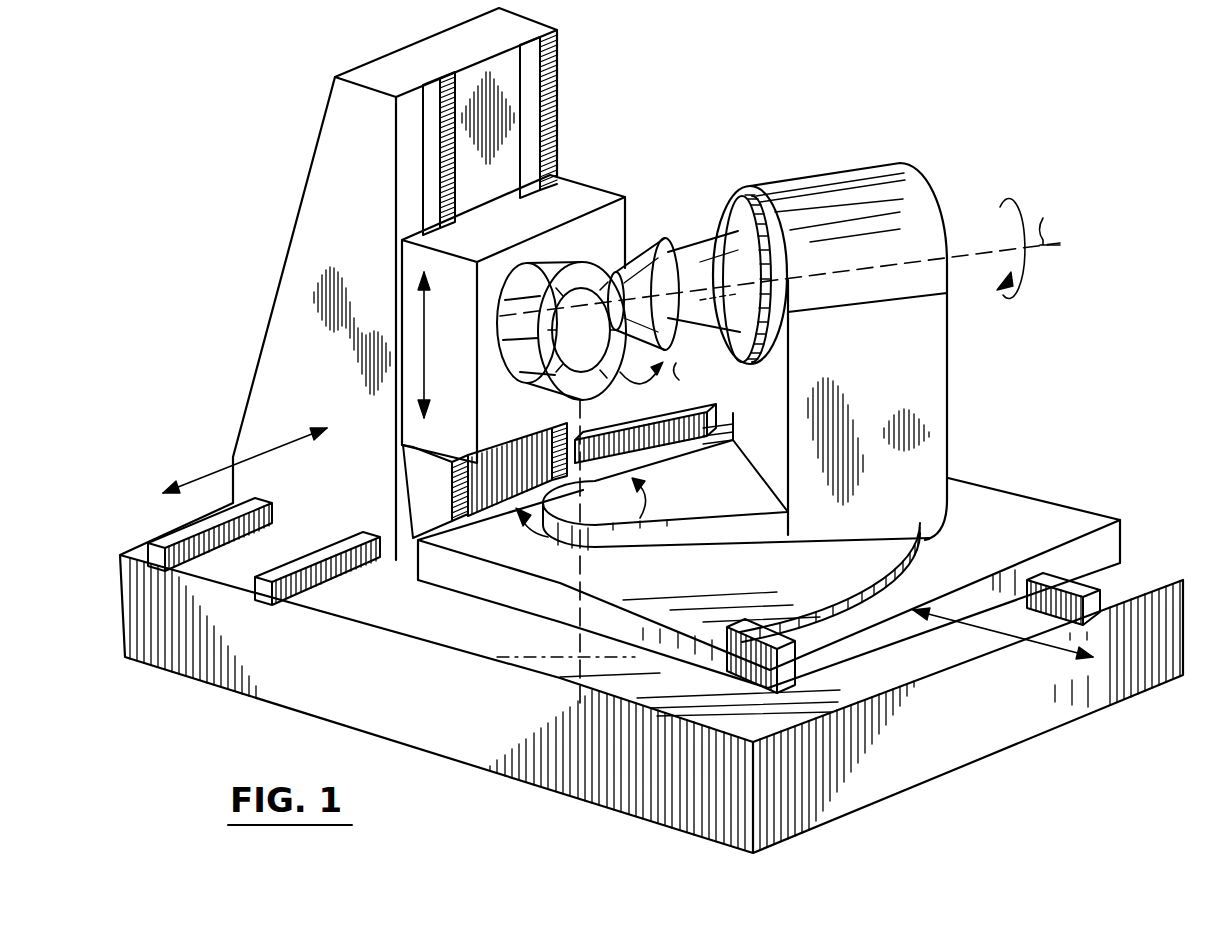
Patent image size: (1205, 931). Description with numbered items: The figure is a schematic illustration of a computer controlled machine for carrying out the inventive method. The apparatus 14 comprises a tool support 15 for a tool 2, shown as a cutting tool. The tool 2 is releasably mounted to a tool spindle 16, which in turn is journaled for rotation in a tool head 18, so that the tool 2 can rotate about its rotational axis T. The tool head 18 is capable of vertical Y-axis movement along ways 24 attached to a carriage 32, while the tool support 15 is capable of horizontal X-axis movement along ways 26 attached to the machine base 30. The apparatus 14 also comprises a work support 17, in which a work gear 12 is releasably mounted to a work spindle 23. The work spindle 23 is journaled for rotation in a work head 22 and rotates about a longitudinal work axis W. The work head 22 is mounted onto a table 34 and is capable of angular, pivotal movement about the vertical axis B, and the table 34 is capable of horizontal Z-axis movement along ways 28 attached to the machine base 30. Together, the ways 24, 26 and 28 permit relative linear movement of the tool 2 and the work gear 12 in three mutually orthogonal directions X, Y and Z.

The apparatus 14 is at (687, 140).
The tool support 15 is at (287, 238).
The carriage 32 is at (368, 197).
The ways 24 is at (545, 115).
The tool head 18 is at (506, 288).
The tool spindle 16 is at (528, 398).
The tool 2 is at (575, 290).
The work gear 12 is at (658, 250).
The work spindle 23 is at (718, 228).
The work support 17 is at (928, 185).
The work head 22 is at (868, 267).
The ways 26 is at (168, 533).
The ways 28 is at (1070, 580).
The machine base 30 is at (410, 697).
The table 34 is at (1015, 538).